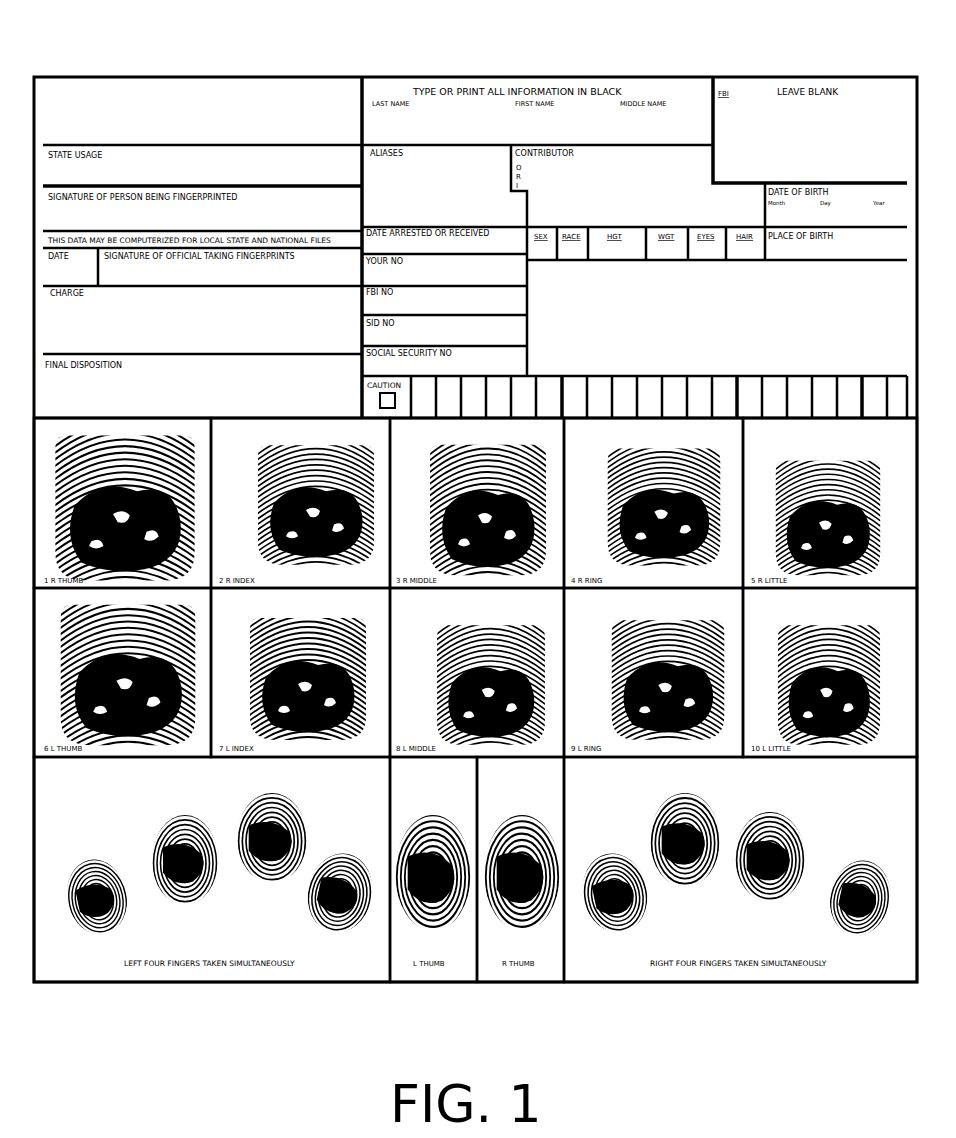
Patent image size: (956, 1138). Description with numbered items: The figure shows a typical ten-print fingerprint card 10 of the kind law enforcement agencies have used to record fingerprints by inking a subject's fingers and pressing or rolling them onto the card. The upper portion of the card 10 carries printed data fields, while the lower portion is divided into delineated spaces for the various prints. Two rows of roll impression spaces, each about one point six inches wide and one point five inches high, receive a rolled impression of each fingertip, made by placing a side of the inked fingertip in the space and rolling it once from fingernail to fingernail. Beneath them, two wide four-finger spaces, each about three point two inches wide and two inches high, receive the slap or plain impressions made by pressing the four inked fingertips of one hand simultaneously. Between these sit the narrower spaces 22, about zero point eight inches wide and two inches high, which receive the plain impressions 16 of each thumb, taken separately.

The ten-print card 10 is at (222, 77).
The plain impressions of each thumb 16 is at (456, 822).
The spaces for the plain thumb impressions 22 is at (492, 965).